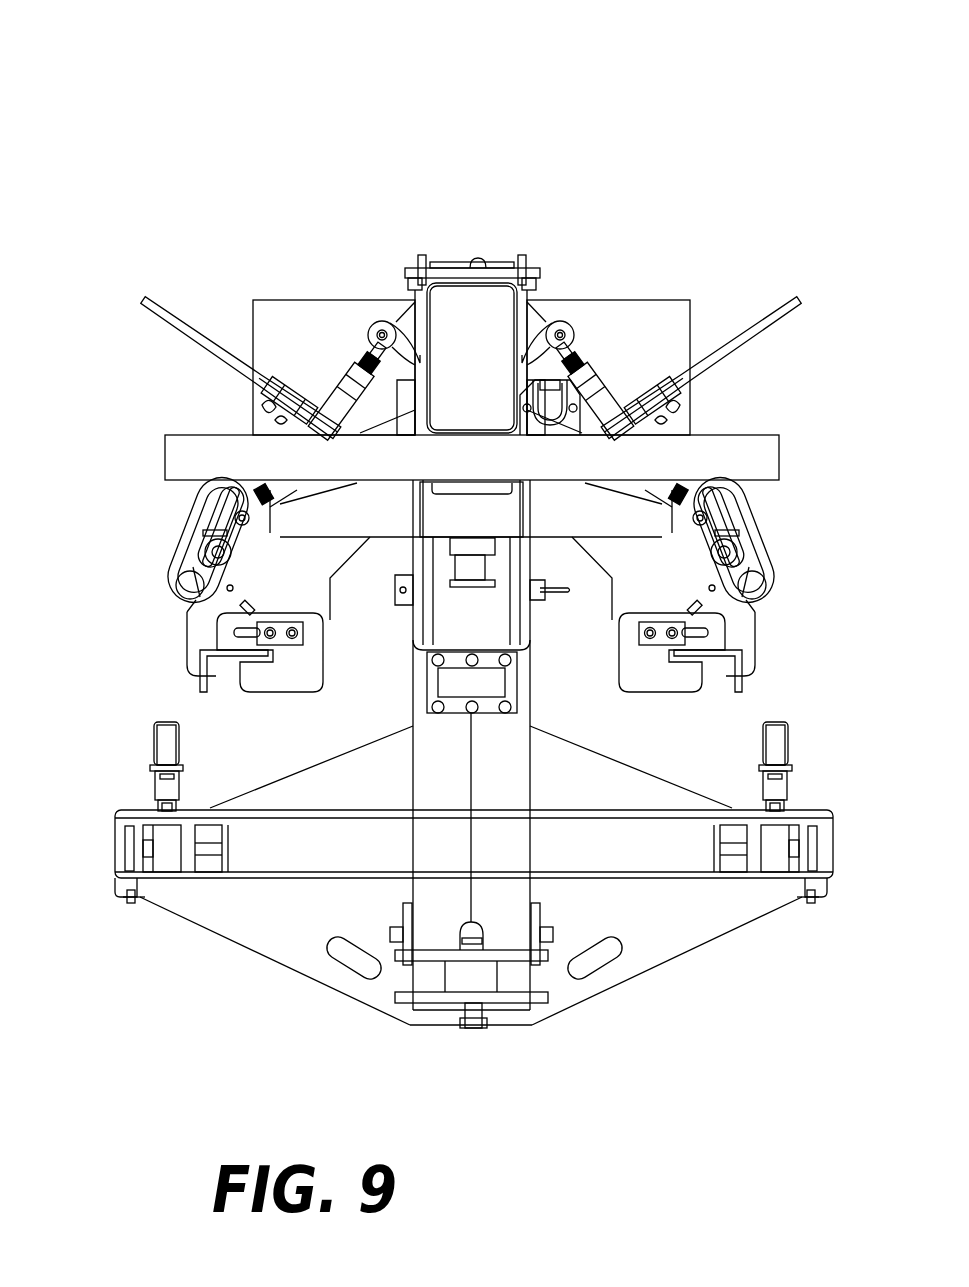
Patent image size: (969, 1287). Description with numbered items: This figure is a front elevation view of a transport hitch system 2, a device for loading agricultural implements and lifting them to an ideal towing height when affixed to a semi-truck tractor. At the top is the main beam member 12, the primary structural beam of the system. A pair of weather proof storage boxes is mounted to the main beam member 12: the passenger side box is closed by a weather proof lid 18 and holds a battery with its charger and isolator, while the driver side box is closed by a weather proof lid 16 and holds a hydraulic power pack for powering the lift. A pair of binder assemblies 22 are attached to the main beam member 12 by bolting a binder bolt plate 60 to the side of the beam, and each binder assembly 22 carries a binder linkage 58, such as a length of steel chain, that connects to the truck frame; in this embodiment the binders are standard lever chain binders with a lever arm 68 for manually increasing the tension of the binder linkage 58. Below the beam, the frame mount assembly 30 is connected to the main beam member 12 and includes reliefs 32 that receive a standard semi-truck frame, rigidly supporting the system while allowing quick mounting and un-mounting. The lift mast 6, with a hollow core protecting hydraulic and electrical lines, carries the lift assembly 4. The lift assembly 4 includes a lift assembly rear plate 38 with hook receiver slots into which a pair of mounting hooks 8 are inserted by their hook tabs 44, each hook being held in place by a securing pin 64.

The transport hitch system 2 is at (125, 72).
The lift assembly 4 is at (667, 1006).
The lift mast 6 is at (530, 660).
The mounting hooks 8 is at (153, 733).
The main beam member 12 is at (480, 270).
The weather proof lid 16 is at (620, 300).
The weather proof lid 18 is at (272, 300).
The binder assemblies 22 is at (192, 404).
The frame mount assembly 30 is at (332, 578).
The reliefs 32 is at (220, 675).
The lift assembly rear plate 38 is at (471, 875).
The hook tabs 44 is at (160, 853).
The binder linkage 58 is at (172, 538).
The binder bolt plate 60 is at (384, 322).
The securing pin 64 is at (118, 848).
The arm 68 is at (146, 298).